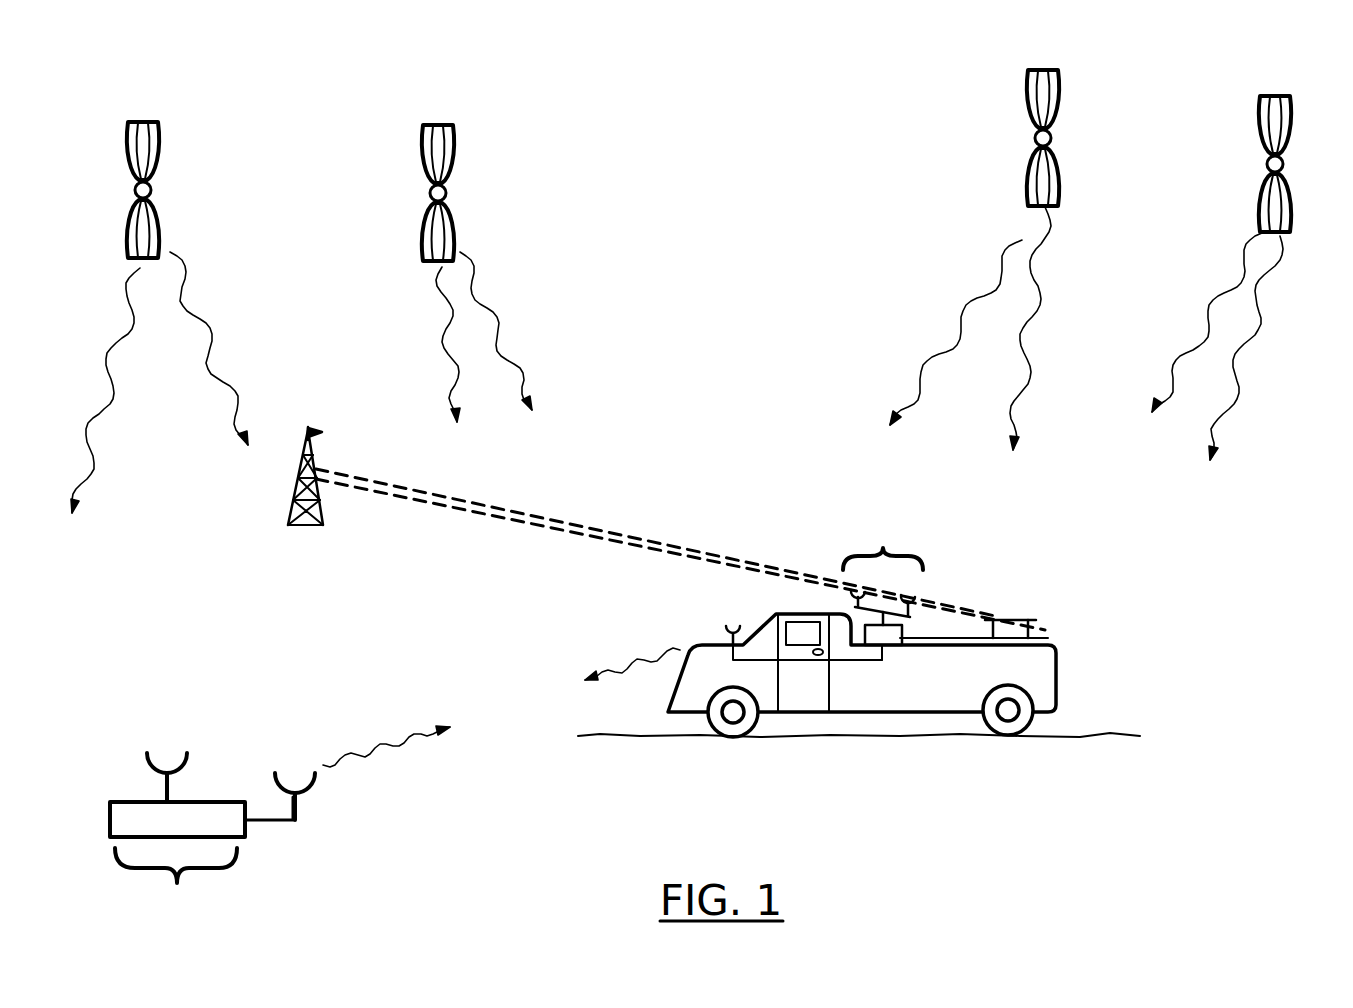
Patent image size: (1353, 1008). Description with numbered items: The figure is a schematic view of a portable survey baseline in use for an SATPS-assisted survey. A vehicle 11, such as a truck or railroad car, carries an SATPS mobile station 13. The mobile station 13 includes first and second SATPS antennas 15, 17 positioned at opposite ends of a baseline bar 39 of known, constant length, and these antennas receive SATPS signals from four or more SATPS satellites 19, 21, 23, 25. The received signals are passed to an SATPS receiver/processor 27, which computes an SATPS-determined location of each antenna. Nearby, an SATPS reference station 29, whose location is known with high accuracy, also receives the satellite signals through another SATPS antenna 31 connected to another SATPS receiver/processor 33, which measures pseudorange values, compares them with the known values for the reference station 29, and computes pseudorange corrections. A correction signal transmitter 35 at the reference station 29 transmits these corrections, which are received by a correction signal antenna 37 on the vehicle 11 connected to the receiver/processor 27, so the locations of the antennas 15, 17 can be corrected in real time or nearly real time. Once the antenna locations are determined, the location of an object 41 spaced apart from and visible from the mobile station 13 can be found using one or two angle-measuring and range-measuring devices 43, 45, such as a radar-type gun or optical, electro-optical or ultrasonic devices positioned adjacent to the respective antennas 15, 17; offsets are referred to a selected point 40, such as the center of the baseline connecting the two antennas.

The vehicle 11 is at (900, 702).
The SATPS mobile station 13 is at (883, 541).
The first SATPS antenna 15 is at (857, 610).
The second SATPS antenna 17 is at (908, 617).
The SATPS satellite 19 is at (147, 118).
The SATPS satellite 21 is at (448, 125).
The SATPS satellite 23 is at (1046, 66).
The SATPS satellite 25 is at (1278, 94).
The SATPS receiver/processor 27 is at (884, 642).
The SATPS reference station 29 is at (176, 886).
The SATPS antenna 31 is at (166, 795).
The SATPS receiver/processor 33 is at (127, 830).
The correction signal transmitter 35 is at (300, 800).
The correction signal antenna 37 is at (728, 642).
The baseline bar 39 is at (853, 600).
The selected point 40 is at (906, 604).
The object 41 is at (313, 453).
The angle-measuring and range-measuring device 43 is at (1000, 618).
The angle-measuring and range-measuring device 45 is at (1033, 618).